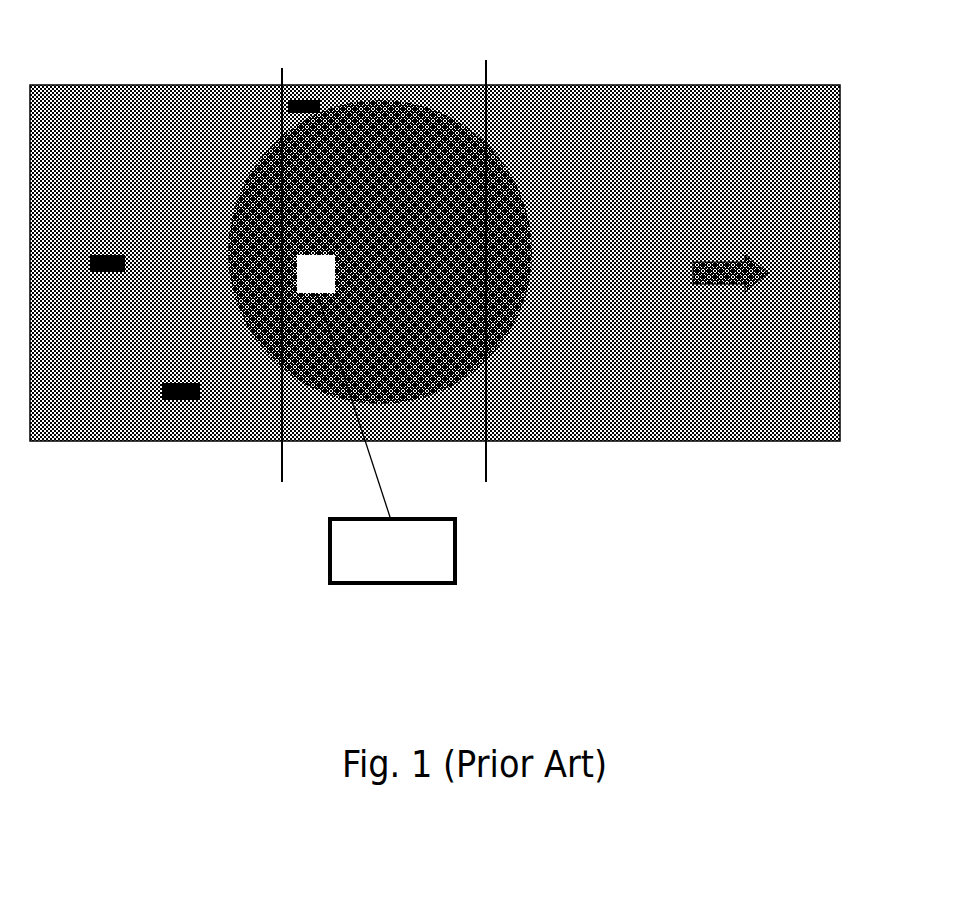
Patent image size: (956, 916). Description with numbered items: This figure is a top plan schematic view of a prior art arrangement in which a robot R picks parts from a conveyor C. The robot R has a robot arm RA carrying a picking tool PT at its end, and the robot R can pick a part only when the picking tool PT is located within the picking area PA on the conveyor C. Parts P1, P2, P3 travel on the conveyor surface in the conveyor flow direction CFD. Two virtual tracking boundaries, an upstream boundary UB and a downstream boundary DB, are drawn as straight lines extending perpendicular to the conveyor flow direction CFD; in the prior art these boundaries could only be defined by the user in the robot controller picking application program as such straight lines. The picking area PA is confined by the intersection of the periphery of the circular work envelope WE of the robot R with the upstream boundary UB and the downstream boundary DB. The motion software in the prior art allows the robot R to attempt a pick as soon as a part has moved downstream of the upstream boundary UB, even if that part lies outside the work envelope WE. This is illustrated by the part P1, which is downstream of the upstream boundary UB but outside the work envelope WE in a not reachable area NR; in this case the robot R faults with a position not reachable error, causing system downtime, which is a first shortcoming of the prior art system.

The conveyor C is at (435, 263).
The picking area PA is at (380, 252).
The not reachable area NR is at (426, 262).
The work envelope WE is at (381, 130).
The upstream boundary UB is at (282, 249).
The downstream boundary DB is at (484, 246).
The part P1 is at (306, 91).
The part P2 is at (108, 249).
The part P3 is at (205, 393).
The conveyor flow direction CFD is at (730, 260).
The robot arm RA is at (370, 459).
The picking tool PT is at (316, 274).
The robot R is at (457, 548).